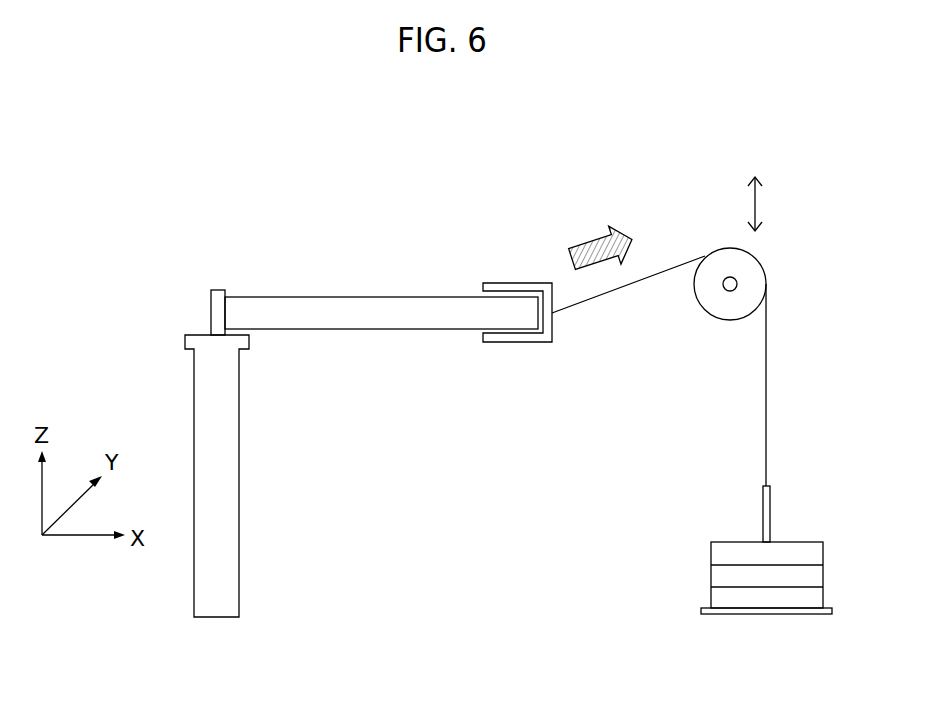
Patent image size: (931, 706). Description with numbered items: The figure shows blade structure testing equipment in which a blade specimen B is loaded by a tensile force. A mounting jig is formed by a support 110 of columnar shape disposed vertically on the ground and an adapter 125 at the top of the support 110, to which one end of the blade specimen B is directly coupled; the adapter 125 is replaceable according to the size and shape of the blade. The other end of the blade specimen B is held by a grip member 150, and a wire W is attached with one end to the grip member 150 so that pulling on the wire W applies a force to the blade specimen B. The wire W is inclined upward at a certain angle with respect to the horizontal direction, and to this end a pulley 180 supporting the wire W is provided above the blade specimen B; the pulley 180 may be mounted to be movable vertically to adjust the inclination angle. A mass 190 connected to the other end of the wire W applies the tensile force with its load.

The support 110 is at (178, 579).
The adapter 125 is at (217, 316).
The grip member 150 is at (527, 338).
The pulley 180 is at (746, 268).
The mass 190 is at (725, 541).
The blade specimen B is at (382, 316).
The wire W is at (633, 292).